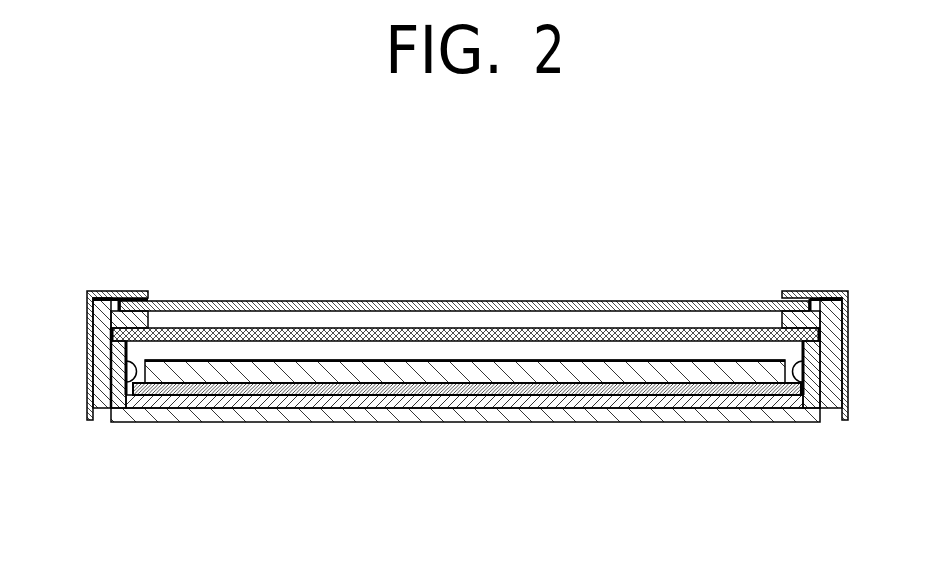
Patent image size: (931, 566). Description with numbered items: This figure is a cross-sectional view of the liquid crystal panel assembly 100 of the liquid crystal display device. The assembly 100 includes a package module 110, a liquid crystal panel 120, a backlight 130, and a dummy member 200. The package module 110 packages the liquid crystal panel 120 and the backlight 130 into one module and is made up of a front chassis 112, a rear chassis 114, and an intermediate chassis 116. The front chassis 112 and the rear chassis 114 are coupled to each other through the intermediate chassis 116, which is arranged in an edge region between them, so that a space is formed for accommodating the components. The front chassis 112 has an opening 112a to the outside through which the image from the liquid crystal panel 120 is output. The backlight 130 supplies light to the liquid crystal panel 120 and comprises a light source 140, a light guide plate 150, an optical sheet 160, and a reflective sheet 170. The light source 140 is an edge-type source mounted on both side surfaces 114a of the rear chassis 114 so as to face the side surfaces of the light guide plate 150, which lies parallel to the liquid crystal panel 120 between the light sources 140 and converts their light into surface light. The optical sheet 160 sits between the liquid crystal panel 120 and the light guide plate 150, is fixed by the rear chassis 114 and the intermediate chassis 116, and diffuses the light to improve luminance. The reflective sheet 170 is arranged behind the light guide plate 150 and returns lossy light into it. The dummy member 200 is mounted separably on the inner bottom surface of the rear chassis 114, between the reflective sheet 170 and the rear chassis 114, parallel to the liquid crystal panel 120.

The liquid crystal panel assembly 100 is at (497, 162).
The package module 110 is at (183, 488).
The front chassis 112 is at (90, 420).
The opening 112a is at (150, 297).
The rear chassis 114 is at (165, 420).
The side surfaces of the rear chassis 114a is at (136, 326).
The intermediate chassis 116 is at (103, 413).
The liquid crystal panel 120 is at (363, 301).
The backlight 130 is at (847, 482).
The light source 140 is at (796, 377).
The light guide plate 150 is at (722, 372).
The optical sheet 160 is at (690, 342).
The reflective sheet 170 is at (790, 388).
The dummy member 200 is at (238, 405).